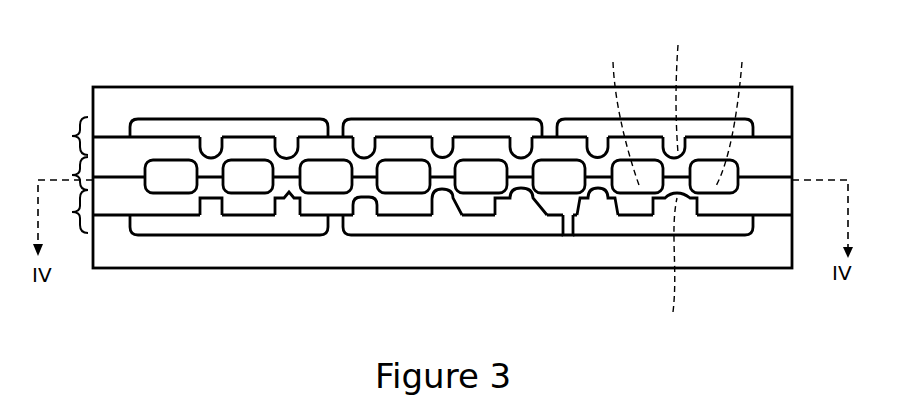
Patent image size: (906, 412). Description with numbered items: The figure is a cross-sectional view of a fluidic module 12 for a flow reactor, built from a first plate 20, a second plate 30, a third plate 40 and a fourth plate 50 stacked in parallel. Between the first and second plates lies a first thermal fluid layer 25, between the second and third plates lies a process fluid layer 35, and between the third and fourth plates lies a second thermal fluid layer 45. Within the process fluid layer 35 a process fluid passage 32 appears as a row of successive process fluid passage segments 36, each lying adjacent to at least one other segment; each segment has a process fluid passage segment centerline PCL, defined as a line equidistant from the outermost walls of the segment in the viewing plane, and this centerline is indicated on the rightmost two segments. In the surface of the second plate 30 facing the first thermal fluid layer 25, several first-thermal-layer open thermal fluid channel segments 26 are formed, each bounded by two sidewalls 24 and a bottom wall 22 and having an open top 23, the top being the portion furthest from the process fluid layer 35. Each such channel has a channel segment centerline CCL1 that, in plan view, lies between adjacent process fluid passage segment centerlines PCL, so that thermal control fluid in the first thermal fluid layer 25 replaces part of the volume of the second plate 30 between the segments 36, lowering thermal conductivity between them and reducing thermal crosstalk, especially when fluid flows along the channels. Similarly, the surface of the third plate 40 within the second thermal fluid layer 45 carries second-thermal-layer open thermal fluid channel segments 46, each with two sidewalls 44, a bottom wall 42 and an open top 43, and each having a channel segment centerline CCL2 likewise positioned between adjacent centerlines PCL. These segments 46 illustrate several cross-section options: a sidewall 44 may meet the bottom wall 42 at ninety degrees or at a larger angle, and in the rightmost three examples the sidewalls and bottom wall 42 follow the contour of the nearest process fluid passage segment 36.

The fluidic module 12 is at (155, 300).
The first plate 20 is at (781, 128).
The bottom wall 22 is at (288, 150).
The open top 23 is at (364, 134).
The sidewall 24 is at (212, 150).
The first thermal fluid layer 25 is at (68, 136).
The first-thermal-layer open thermal fluid channel segment 26 is at (597, 134).
The second plate 30 is at (780, 165).
The process fluid passage 32 is at (170, 177).
The process fluid layer 35 is at (68, 174).
The process fluid passage segment 36 is at (247, 173).
The third plate 40 is at (782, 190).
The bottom wall 42 is at (212, 200).
The open top 43 is at (364, 220).
The sidewall 44 is at (289, 200).
The second thermal fluid layer 45 is at (72, 212).
The second-thermal-layer open thermal fluid channel segment 46 is at (596, 222).
The fourth plate 50 is at (783, 232).
The process fluid passage segment centerline PCL is at (678, 114).
The channel segment centerline CCL1 is at (681, 86).
The channel segment centerline CCL2 is at (671, 267).